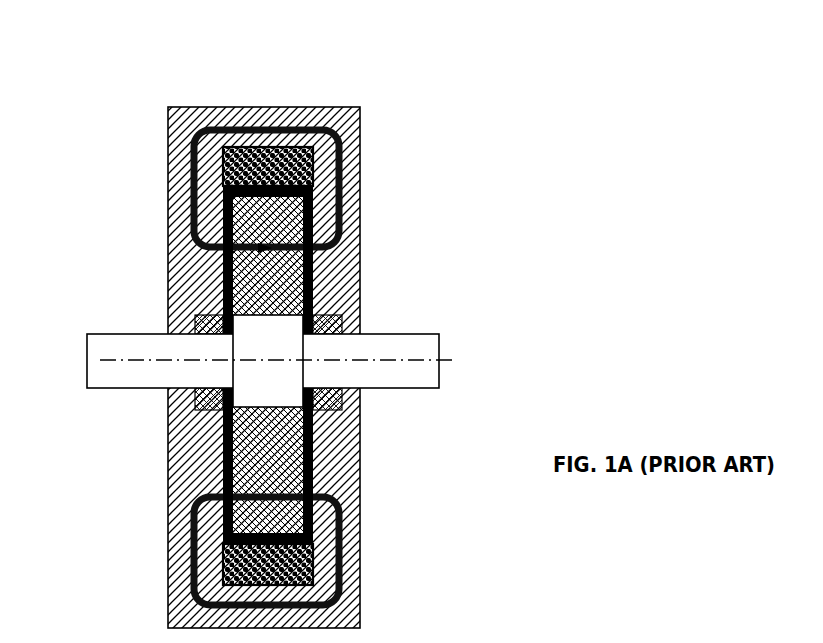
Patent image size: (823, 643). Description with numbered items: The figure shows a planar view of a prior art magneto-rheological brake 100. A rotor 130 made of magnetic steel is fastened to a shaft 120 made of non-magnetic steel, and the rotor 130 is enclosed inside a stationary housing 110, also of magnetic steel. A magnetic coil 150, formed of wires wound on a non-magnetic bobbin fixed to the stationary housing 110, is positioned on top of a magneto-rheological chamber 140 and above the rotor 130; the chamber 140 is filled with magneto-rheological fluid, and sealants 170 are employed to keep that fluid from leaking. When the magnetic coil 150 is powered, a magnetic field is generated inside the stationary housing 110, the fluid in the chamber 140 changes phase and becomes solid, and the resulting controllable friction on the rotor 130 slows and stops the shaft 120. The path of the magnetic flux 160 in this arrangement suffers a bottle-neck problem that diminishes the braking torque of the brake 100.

The magneto-rheological brake 100 is at (413, 87).
The stationary housing 110 is at (181, 431).
The shaft 120 is at (136, 356).
The rotor 130 is at (275, 472).
The magneto-rheological chamber 140 is at (230, 527).
The magnetic coil 150 is at (233, 575).
The magnetic flux 160 is at (194, 185).
The sealants 170 is at (197, 325).